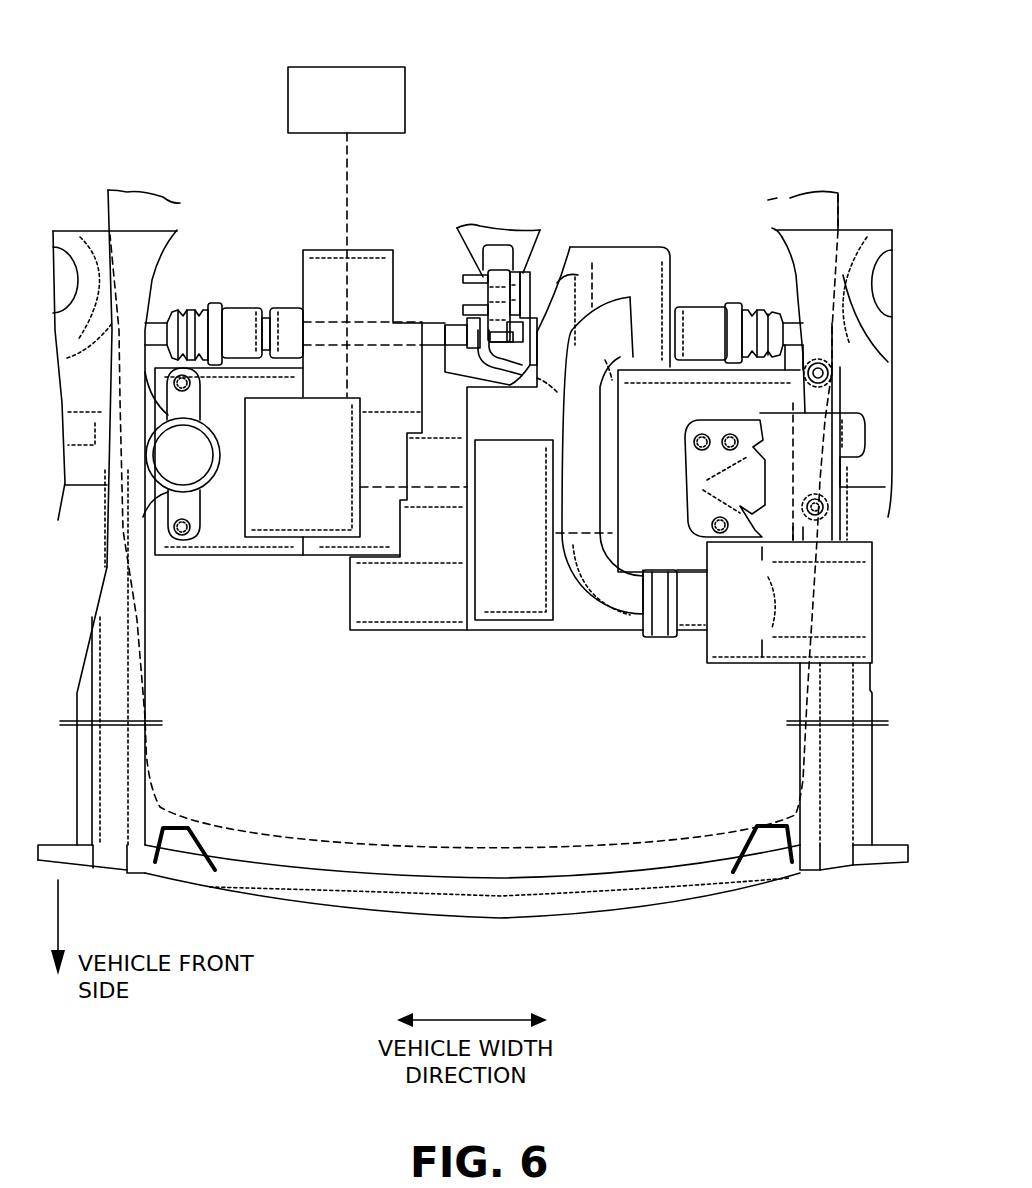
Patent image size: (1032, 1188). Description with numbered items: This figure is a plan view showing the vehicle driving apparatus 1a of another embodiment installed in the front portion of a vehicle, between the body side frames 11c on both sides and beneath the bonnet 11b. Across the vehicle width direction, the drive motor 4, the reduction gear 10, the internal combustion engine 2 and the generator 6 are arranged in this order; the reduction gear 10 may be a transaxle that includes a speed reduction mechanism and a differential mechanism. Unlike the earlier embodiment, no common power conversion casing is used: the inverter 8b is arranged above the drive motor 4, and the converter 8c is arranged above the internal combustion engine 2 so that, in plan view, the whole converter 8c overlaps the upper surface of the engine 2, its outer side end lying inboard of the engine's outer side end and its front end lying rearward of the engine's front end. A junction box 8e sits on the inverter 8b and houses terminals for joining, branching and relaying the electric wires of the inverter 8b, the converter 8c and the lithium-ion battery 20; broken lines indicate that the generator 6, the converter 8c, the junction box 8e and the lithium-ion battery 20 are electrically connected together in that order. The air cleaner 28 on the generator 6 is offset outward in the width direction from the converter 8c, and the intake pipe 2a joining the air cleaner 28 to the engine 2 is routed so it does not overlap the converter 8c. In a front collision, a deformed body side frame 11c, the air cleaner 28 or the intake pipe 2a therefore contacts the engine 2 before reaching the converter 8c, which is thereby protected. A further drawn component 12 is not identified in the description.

The vehicle driving apparatus 1a is at (545, 170).
The internal combustion engine 2 is at (577, 247).
The intake pipe 2a is at (630, 297).
The drive motor 4 is at (163, 527).
The generator 6 is at (787, 322).
The inverter 8b is at (292, 413).
The junction box 8e is at (294, 405).
The converter 8c is at (533, 621).
The reduction gear 10 is at (318, 270).
The bonnet 11b is at (103, 218).
The body side frame 11c is at (104, 807).
The drive shaft 12 is at (712, 323).
The lithium-ion battery 20 is at (365, 67).
The air cleaner 28 is at (715, 663).